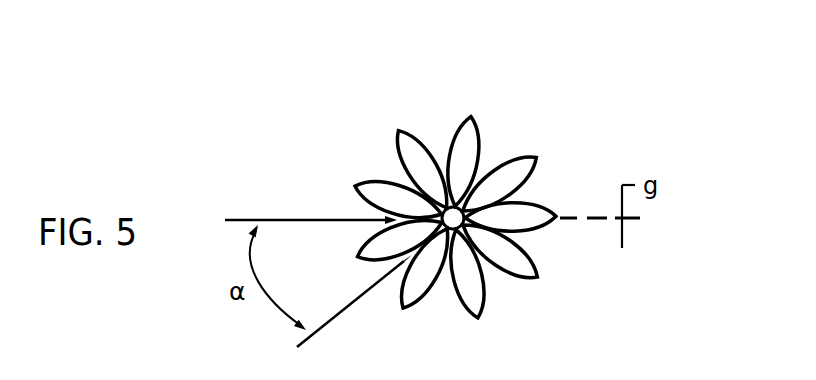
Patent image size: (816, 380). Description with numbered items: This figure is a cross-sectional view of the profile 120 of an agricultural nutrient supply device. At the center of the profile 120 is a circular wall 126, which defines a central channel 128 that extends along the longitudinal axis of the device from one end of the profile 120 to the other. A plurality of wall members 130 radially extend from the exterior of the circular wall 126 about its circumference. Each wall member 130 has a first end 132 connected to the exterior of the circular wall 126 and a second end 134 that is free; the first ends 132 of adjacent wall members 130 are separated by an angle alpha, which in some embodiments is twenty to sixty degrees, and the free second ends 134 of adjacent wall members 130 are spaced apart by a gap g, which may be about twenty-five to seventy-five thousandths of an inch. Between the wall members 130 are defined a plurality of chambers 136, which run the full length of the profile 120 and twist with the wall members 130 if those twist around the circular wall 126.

The profile 120 is at (308, 122).
The circular wall 126 is at (451, 206).
The central channel 128 is at (458, 215).
The wall member 130 is at (485, 165).
The first end of wall member 132 is at (447, 231).
The second end of wall member 134 is at (555, 207).
The chamber 136 is at (425, 167).